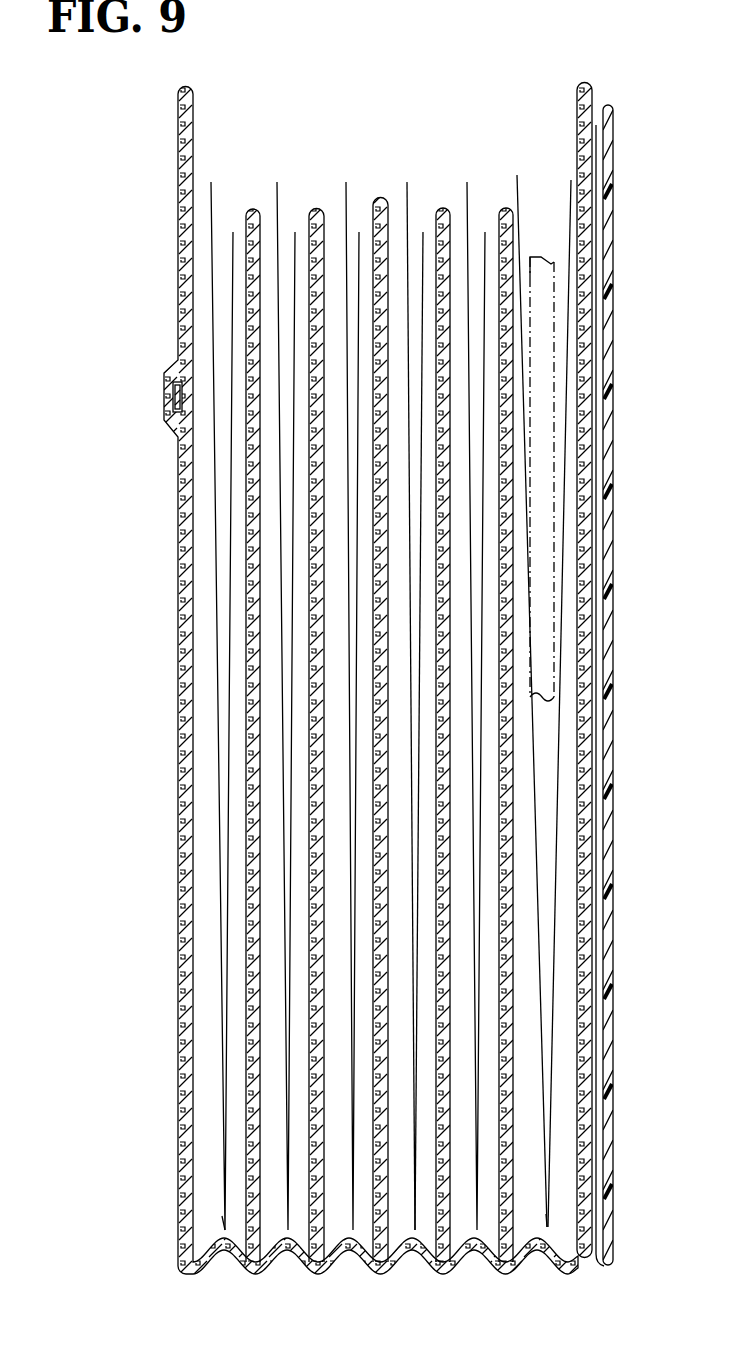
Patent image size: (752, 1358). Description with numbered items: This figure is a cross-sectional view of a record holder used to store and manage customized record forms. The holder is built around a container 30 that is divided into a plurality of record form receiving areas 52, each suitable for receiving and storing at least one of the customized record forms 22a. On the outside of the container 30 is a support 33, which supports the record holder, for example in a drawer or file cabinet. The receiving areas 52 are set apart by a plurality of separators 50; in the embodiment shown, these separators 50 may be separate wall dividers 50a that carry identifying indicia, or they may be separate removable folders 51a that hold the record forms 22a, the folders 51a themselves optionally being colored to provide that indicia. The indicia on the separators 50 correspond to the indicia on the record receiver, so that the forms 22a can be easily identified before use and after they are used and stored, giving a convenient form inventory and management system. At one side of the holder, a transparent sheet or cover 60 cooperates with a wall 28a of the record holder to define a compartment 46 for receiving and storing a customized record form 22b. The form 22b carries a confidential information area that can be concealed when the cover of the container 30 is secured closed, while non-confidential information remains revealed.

The record form 22a is at (553, 262).
The record form 22b is at (597, 207).
The wall 28a is at (580, 80).
The container 30 is at (297, 1256).
The support 33 is at (180, 398).
The compartment 46 is at (598, 110).
The separator 50 is at (211, 197).
The wall divider 50a is at (397, 1232).
The removable folder 51a is at (224, 1220).
The record form receiving area 52 is at (396, 180).
The transparent sheet or cover 60 is at (613, 396).